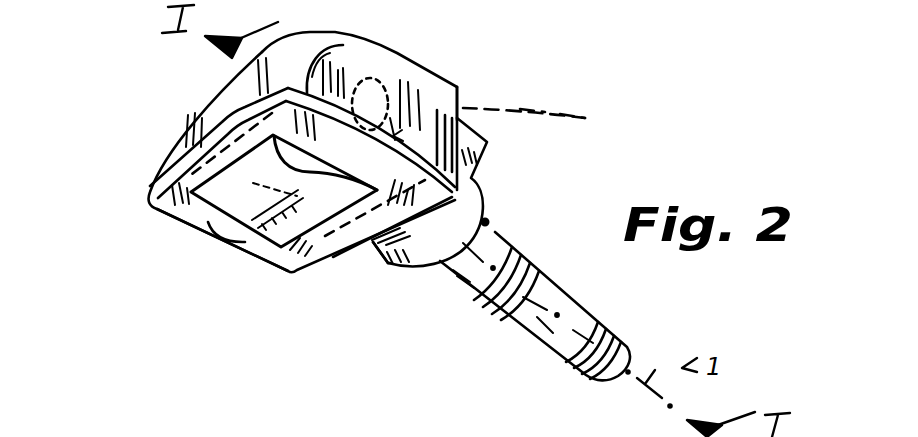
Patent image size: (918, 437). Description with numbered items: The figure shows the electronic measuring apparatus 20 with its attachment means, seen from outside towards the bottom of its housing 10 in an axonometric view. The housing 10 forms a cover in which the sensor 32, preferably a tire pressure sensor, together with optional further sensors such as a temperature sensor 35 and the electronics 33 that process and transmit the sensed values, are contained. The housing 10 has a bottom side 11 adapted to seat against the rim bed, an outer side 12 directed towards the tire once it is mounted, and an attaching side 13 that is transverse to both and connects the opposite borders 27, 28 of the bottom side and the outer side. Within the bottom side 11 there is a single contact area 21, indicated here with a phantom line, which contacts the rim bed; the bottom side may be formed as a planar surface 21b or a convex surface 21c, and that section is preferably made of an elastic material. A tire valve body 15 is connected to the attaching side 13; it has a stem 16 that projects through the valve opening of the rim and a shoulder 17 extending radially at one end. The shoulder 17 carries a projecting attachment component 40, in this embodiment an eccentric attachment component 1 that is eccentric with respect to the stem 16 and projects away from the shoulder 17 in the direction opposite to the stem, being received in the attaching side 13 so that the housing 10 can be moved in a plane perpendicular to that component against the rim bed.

The eccentric attachment component 1 is at (388, 327).
The housing 10 is at (176, 145).
The bottom side 11 is at (212, 200).
The outer side 12 is at (441, 58).
The attaching side 13 is at (332, 268).
The tire valve body 15 is at (494, 219).
The stem 16 is at (470, 286).
The shoulder 17 is at (484, 192).
The electronic measuring apparatus 20 is at (493, 86).
The contact area 21 is at (240, 240).
The planar surface 21b is at (309, 424).
The convex surface 21c is at (143, 423).
The border of the bottom side 27 is at (294, 266).
The border of the outer side 28 is at (465, 78).
The sensor 32 is at (556, 118).
The electronics 33 is at (616, 117).
The temperature sensor 35 is at (663, 115).
The projecting attachment component 40 is at (378, 272).